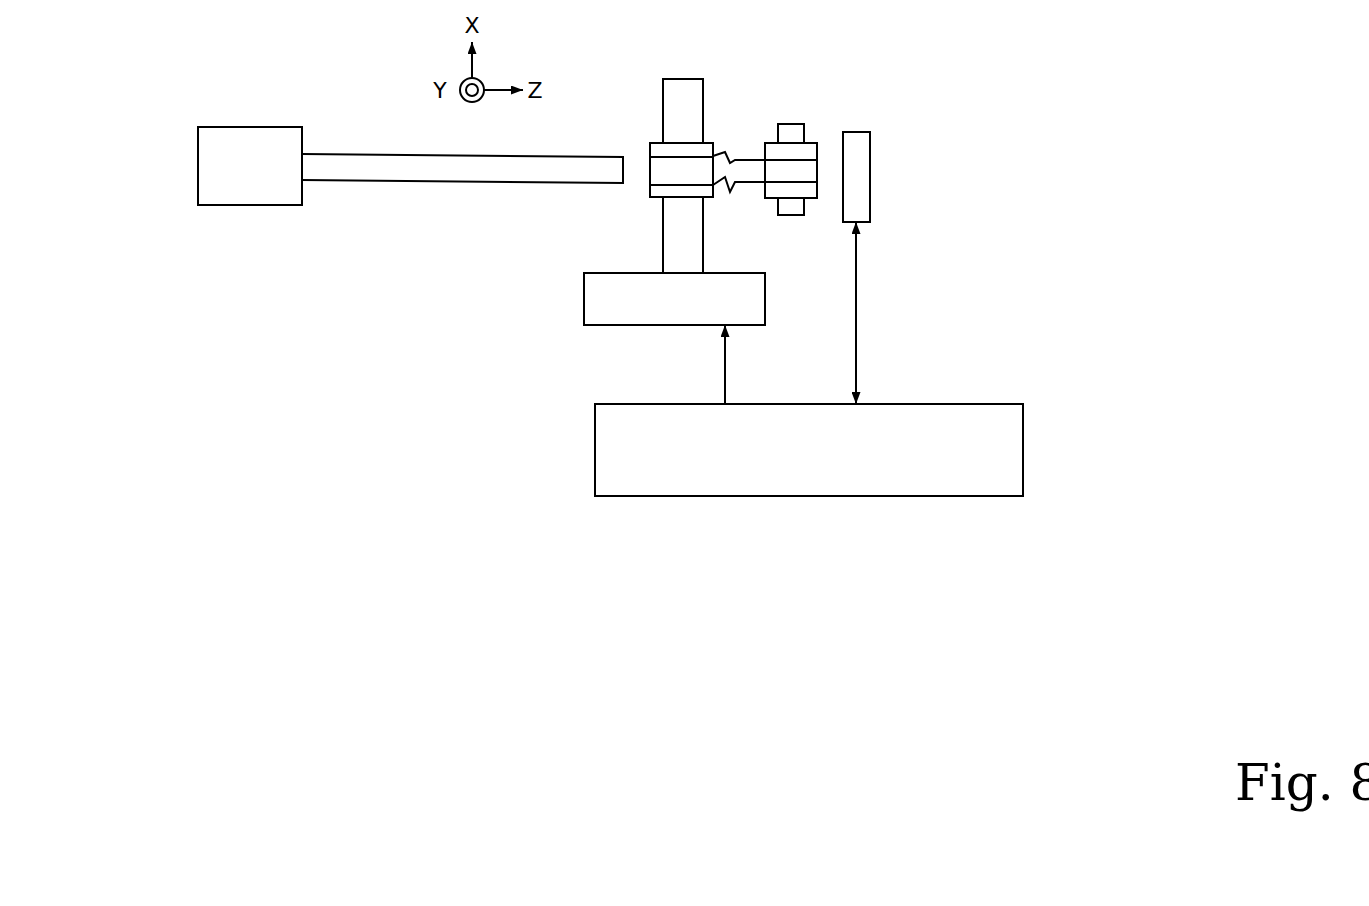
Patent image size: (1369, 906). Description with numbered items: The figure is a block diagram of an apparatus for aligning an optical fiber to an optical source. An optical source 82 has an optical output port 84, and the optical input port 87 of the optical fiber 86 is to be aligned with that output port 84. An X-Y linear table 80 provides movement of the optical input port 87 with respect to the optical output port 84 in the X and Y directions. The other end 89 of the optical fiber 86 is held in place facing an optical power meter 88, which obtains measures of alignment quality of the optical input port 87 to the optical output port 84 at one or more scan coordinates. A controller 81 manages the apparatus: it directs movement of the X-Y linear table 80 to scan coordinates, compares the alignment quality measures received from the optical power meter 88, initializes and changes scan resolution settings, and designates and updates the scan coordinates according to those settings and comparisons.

The X-Y linear table 80 is at (584, 299).
The controller 81 is at (810, 497).
The optical source 82 is at (198, 164).
The optical output port 84 is at (622, 186).
The optical fiber 86 is at (743, 152).
The optical input port 87 is at (647, 174).
The optical power meter 88 is at (871, 178).
The other end 89 is at (819, 164).